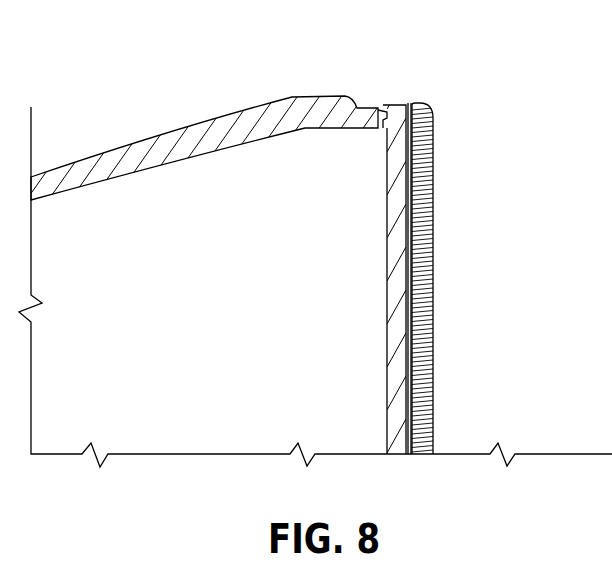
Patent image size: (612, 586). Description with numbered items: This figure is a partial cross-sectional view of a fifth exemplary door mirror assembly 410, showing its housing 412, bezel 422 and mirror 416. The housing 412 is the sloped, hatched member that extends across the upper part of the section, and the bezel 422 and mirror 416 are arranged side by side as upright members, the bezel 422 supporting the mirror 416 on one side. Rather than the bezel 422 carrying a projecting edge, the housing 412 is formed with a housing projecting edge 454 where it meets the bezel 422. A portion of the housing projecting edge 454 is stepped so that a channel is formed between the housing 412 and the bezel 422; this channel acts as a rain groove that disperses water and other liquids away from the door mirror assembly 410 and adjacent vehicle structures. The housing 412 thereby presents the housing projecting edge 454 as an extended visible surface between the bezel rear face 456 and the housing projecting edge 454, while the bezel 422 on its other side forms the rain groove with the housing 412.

The door mirror assembly 410 is at (173, 105).
The housing 412 is at (293, 100).
The housing projecting edge 454 is at (378, 92).
The bezel 422 is at (402, 102).
The bezel rear face 456 is at (386, 165).
The mirror 416 is at (435, 155).